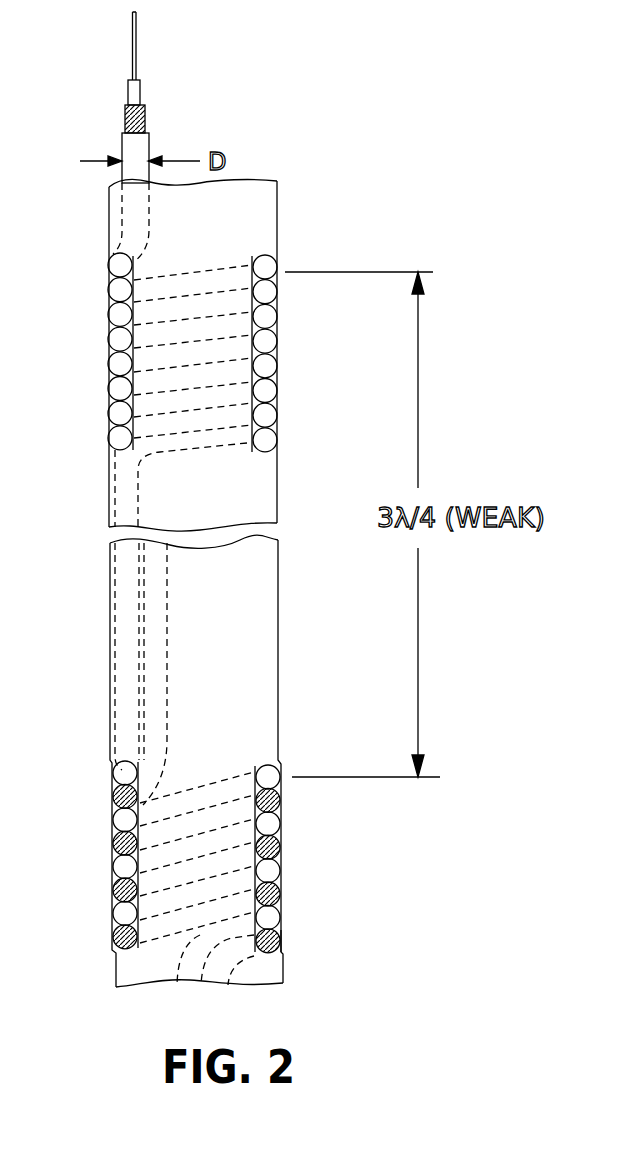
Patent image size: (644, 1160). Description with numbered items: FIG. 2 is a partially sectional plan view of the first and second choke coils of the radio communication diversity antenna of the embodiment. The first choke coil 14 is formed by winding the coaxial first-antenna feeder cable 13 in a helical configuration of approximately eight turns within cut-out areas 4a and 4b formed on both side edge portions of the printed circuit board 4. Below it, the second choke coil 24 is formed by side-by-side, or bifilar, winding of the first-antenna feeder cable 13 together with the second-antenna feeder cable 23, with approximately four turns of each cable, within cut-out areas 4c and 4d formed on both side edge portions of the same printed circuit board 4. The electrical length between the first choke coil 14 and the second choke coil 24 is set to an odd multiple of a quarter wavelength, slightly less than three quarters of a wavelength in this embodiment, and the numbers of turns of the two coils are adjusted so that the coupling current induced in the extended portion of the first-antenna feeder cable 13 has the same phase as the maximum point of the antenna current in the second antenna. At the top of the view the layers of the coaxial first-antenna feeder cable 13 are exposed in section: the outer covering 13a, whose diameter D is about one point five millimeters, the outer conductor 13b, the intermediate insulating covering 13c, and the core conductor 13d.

The printed circuit board 4 is at (261, 216).
The cut-out area 4a is at (110, 446).
The cut-out area 4b is at (278, 446).
The cut-out area 4c is at (113, 946).
The cut-out area 4d is at (283, 946).
The first-antenna feeder cable 13 is at (138, 403).
The outer covering 13a is at (122, 173).
The outer conductor 13b is at (125, 117).
The intermediate insulating covering 13c is at (128, 90).
The core conductor 13d is at (132, 20).
The first choke coil 14 is at (202, 360).
The second-antenna feeder cable 23 is at (112, 796).
The second choke coil 24 is at (202, 873).